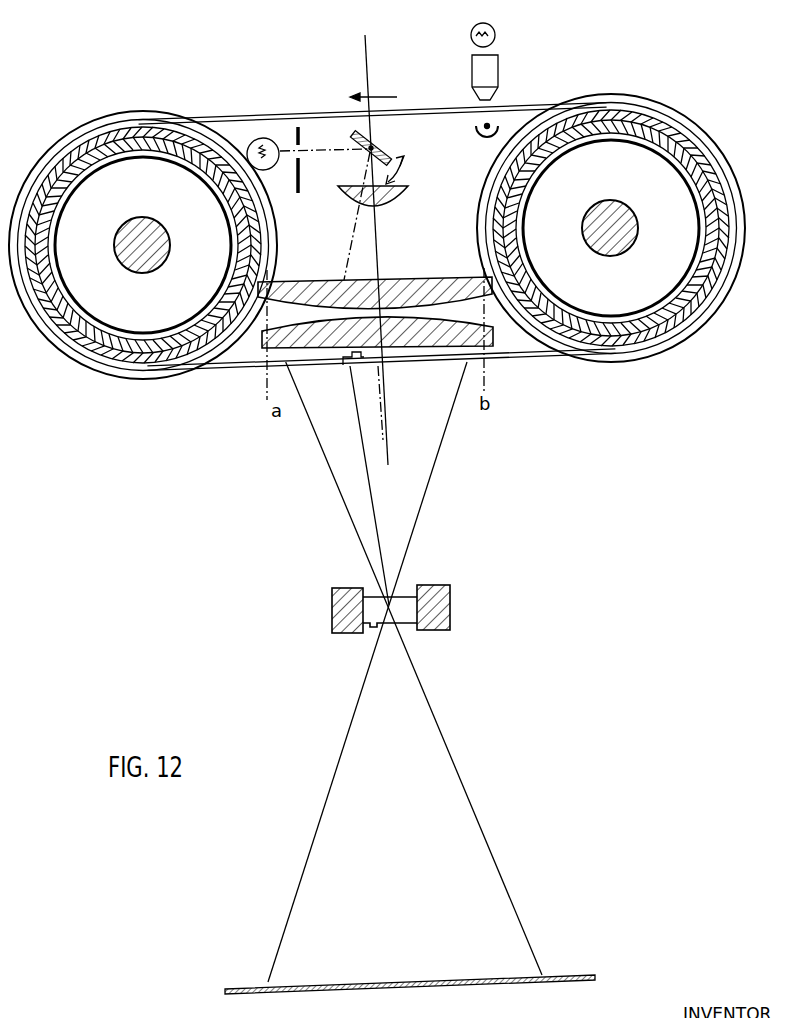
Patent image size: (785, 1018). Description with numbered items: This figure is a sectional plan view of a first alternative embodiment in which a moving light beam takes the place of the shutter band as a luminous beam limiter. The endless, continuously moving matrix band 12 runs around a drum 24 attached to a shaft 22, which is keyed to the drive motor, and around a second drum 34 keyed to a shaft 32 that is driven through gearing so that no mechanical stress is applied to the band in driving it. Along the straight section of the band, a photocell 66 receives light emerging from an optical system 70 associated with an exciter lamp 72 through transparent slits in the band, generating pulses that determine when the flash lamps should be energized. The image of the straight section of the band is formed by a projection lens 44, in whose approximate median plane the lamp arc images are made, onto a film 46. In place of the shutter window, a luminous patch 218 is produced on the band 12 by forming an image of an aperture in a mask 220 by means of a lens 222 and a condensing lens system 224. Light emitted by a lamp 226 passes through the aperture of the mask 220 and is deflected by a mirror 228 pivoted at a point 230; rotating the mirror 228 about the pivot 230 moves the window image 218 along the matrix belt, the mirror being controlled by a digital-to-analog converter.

The matrix band 12 is at (277, 118).
The shaft 22 is at (172, 205).
The drum 24 is at (57, 209).
The shaft 32 is at (631, 208).
The drum 34 is at (522, 201).
The projection lens 44 is at (376, 624).
The film 46 is at (569, 978).
The photocell 66 is at (474, 130).
The optical system 70 is at (499, 70).
The exciter lamp 72 is at (494, 30).
The luminous patch 218 is at (350, 366).
The mask 220 is at (297, 193).
The lens 222 is at (403, 196).
The condensing lens system 224 is at (399, 273).
The lamp 226 is at (255, 140).
The mirror 228 is at (358, 142).
The pivot 230 is at (361, 154).